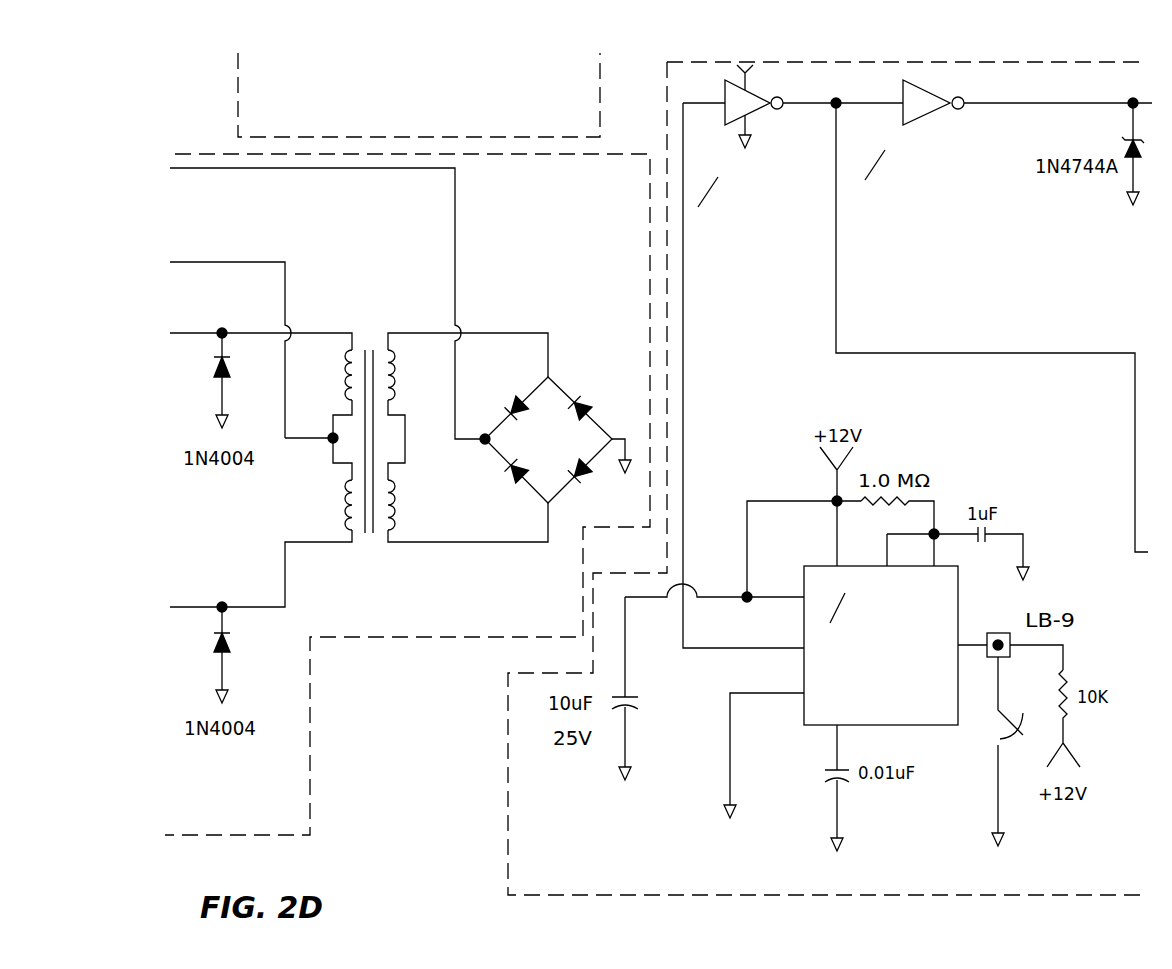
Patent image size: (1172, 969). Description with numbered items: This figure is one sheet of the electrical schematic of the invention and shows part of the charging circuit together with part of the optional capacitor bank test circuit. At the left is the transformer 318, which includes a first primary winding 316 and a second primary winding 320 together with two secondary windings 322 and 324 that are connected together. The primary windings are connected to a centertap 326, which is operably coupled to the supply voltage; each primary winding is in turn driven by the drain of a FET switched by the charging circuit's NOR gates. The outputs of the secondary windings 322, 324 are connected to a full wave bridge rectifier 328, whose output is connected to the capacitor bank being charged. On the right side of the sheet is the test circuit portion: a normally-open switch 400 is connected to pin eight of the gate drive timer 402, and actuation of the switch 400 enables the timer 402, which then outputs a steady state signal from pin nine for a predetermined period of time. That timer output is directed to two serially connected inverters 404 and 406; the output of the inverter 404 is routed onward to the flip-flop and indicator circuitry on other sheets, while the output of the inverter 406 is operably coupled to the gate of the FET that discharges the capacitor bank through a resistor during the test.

The primary winding 316 is at (344, 373).
The transformer 318 is at (365, 437).
The primary winding 320 is at (345, 500).
The secondary winding 322 is at (395, 372).
The secondary winding 324 is at (394, 500).
The centertap 326 is at (329, 440).
The full wave bridge rectifier 328 is at (558, 385).
The normally-open switch 400 is at (990, 737).
The gate drive timer 402 is at (958, 597).
The inverter 404 is at (760, 113).
The inverter 406 is at (942, 113).